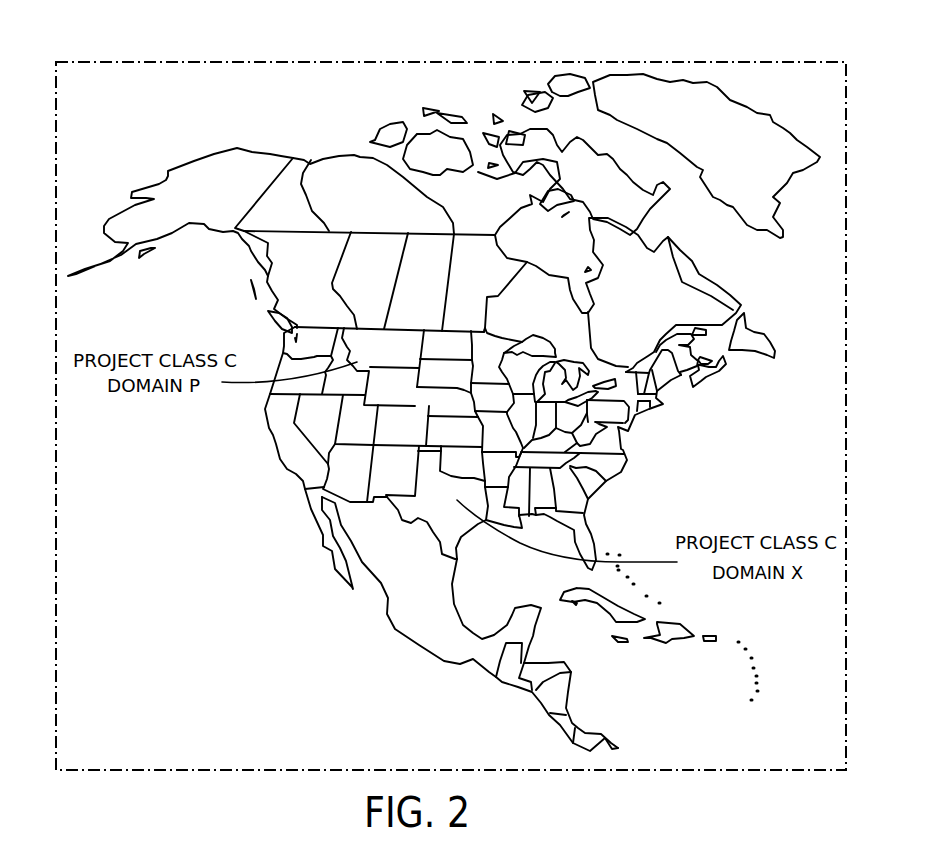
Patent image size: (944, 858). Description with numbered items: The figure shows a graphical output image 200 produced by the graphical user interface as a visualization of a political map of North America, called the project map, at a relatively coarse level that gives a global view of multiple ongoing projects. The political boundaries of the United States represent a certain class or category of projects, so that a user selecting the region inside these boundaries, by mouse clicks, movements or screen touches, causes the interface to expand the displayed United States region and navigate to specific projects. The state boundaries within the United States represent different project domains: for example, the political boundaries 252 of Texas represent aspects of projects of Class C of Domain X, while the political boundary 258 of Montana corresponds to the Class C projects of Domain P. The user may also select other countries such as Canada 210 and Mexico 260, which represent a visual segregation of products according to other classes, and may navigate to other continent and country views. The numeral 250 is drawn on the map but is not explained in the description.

The graphical output image 200 is at (325, 38).
The Canada 210 is at (253, 295).
The first region 250 is at (273, 423).
The political boundaries of Texas 252 is at (338, 548).
The political boundary of Montana 258 is at (377, 350).
The Mexico 260 is at (380, 590).